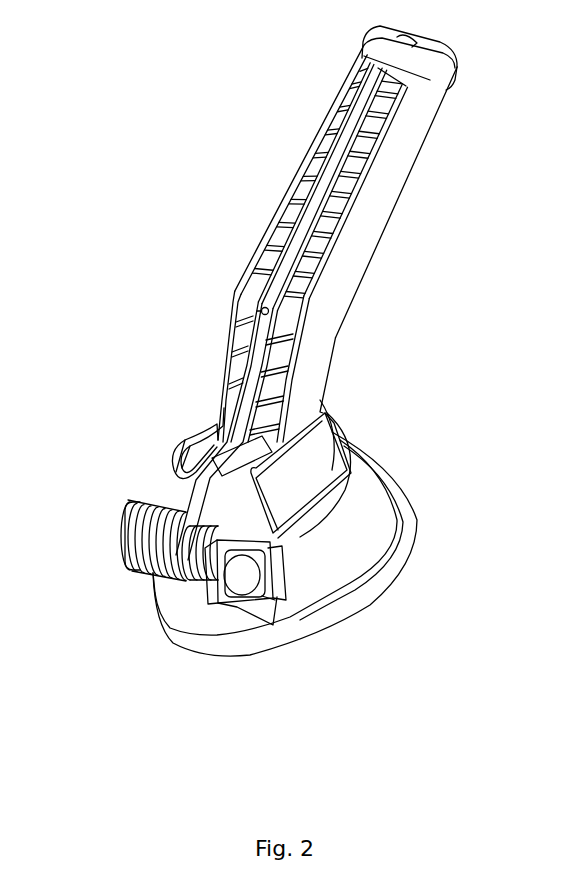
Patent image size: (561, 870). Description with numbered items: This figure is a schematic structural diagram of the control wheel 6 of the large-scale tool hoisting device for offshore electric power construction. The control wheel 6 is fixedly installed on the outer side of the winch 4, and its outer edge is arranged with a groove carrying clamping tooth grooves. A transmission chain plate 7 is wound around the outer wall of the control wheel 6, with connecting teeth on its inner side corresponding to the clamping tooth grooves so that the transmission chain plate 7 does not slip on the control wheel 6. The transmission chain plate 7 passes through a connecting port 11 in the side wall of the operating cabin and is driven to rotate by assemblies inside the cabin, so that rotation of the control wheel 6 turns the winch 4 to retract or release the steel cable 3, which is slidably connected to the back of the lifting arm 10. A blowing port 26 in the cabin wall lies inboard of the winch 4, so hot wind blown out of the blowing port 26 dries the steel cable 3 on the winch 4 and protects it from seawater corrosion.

The lifting arm 10 is at (367, 233).
The steel cable 3 is at (240, 363).
The blowing port 26 is at (187, 507).
The winch 4 is at (157, 576).
The transmission chain plate 7 is at (270, 545).
The control wheel 6 is at (240, 573).
The connecting port 11 is at (268, 570).